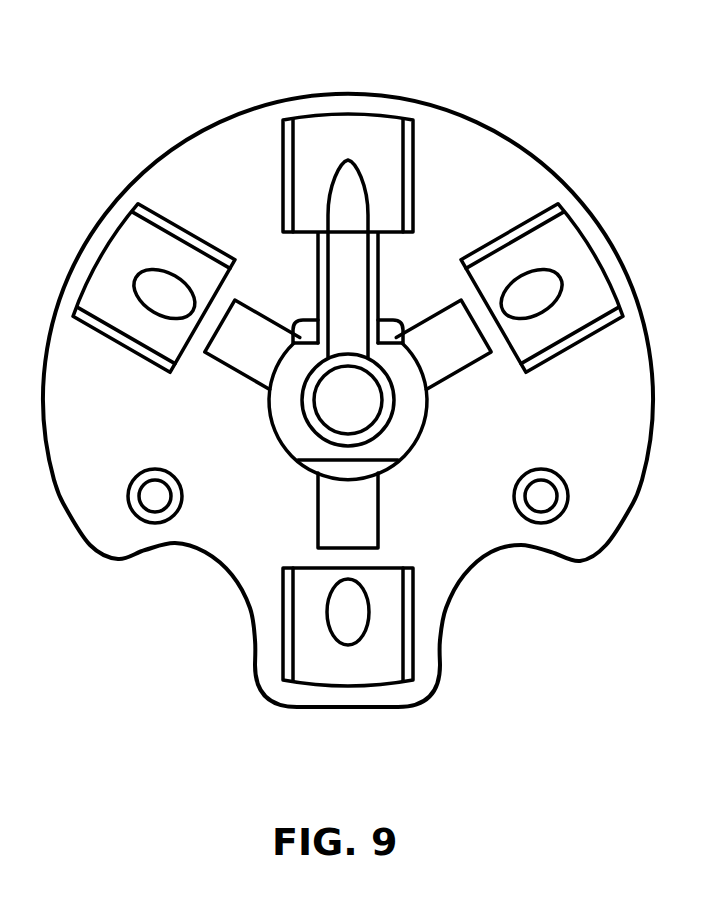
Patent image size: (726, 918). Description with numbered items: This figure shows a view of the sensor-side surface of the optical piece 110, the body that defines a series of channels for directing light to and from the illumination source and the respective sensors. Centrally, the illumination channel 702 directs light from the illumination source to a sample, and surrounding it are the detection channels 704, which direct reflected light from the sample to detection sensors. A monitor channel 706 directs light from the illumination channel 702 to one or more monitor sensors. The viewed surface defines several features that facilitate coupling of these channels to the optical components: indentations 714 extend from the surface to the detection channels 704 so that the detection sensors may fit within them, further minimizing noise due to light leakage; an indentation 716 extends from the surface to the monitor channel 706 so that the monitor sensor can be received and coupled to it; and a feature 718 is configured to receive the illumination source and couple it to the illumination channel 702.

The optical piece 110 is at (172, 49).
The illumination channel 702 is at (315, 395).
The detection channels 704 is at (160, 318).
The monitor channel 706 is at (333, 190).
The indentations 714 is at (108, 240).
The indentation 716 is at (388, 116).
The feature 718 is at (427, 415).